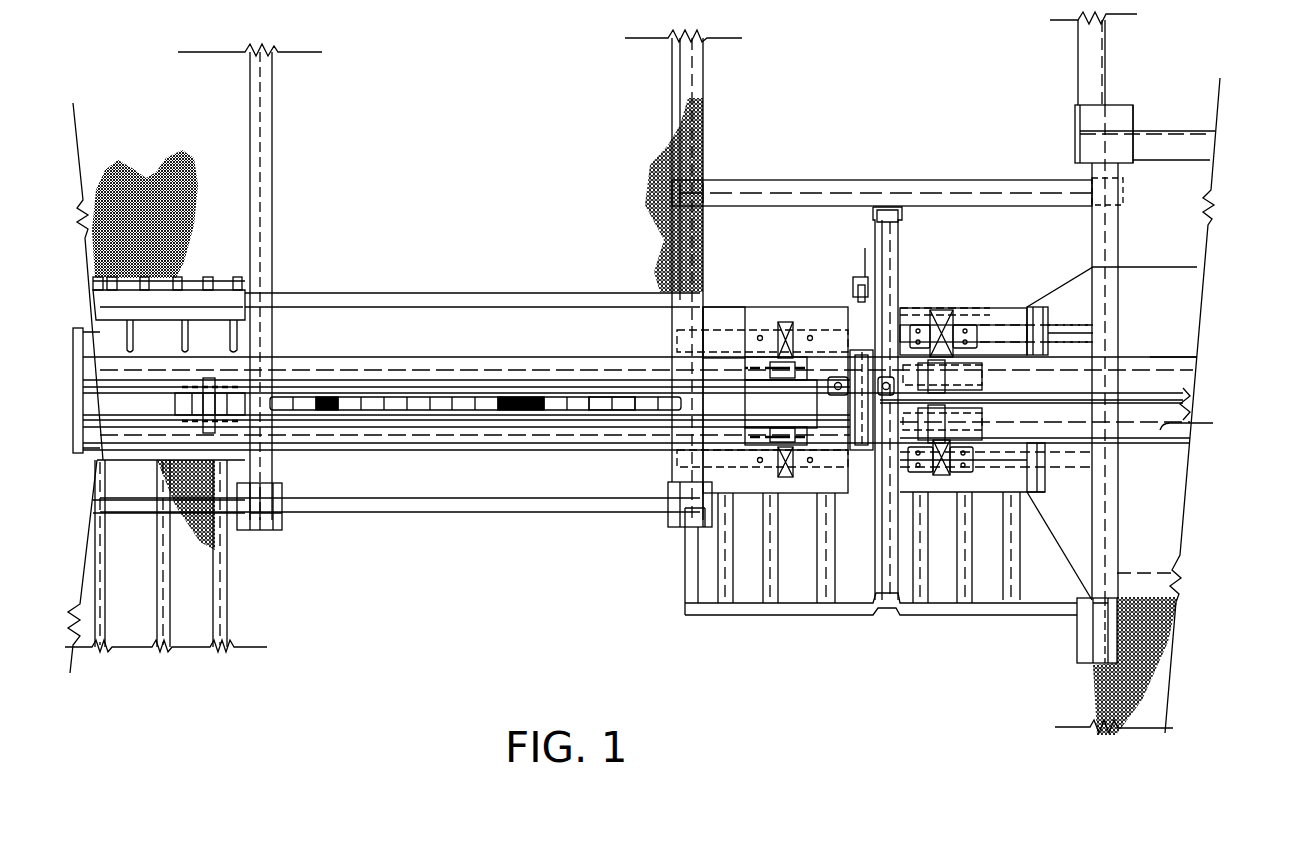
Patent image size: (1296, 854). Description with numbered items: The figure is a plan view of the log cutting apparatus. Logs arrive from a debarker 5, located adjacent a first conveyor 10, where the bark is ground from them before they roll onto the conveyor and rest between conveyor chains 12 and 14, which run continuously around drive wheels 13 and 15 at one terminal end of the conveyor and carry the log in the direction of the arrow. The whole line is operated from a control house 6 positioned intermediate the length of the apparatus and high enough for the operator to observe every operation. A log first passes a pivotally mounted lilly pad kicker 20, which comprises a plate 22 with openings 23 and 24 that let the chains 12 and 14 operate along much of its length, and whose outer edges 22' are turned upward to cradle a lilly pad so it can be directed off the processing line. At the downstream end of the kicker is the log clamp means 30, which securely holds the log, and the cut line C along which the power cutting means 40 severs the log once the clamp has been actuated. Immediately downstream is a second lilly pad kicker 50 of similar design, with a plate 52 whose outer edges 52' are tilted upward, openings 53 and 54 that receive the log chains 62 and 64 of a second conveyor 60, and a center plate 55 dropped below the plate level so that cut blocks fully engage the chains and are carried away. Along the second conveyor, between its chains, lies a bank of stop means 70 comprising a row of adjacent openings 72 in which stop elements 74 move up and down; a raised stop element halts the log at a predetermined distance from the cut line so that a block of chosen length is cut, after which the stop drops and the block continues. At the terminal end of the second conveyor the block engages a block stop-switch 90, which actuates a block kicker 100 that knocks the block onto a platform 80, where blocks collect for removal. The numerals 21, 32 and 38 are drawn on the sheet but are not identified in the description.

The debarker 5 is at (1175, 89).
The control house 6 is at (886, 98).
The first conveyor 10 is at (1208, 357).
The conveyor chain 12 is at (1138, 372).
The drive wheel 13 is at (965, 358).
The conveyor chain 14 is at (1067, 428).
The drive wheel 15 is at (968, 475).
The lilly pad kicker 20 is at (988, 276).
The lower support bar 21 is at (1062, 462).
The plate 22 is at (996, 303).
The outer edges 22' is at (1086, 427).
The opening 23 is at (1005, 441).
The opening 24 is at (1012, 358).
The log clamp means 30 is at (910, 301).
The vertical guide member 32 is at (880, 493).
The vertical post 38 is at (882, 300).
The power cutting means 40 is at (854, 284).
The cut line C is at (865, 248).
The lilly pad kicker 50 is at (790, 293).
The lilly pad kicker plate 52 is at (724, 317).
The outer edges 52' is at (762, 360).
The opening 53 is at (765, 440).
The opening 54 is at (757, 330).
The center plate 55 is at (757, 445).
The second conveyor 60 is at (426, 458).
The log chain 62 is at (437, 366).
The log chain 64 is at (467, 437).
The stop means 70 is at (393, 396).
The openings 72 is at (616, 412).
The stop element 74 is at (532, 412).
The platform 80 is at (248, 626).
The block stop-switch 90 is at (72, 383).
The block kicker 100 is at (233, 241).